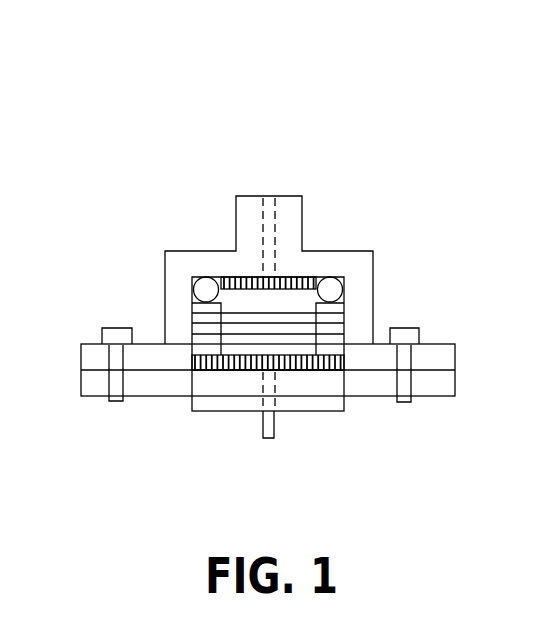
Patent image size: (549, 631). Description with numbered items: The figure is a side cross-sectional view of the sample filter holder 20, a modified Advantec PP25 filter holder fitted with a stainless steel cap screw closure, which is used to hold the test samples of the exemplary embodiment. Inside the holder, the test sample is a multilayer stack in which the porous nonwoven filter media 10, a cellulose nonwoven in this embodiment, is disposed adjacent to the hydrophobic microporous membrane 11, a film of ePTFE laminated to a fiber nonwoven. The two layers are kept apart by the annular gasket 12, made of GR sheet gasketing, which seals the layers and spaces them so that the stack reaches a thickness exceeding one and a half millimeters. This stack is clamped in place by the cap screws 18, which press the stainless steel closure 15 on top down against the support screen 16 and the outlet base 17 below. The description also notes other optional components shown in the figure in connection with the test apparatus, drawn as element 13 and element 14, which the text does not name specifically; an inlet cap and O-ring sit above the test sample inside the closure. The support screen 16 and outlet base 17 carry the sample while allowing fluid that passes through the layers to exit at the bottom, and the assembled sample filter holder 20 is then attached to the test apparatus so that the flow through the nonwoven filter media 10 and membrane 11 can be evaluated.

The sample filter holder 20 is at (252, 145).
The stainless steel closure 15 is at (313, 250).
The filter cavity with O-ring seals 13 is at (195, 277).
The upper screen 14 is at (307, 277).
The annular gasket 12 is at (344, 352).
The porous nonwoven filter media 10 is at (192, 313).
The hydrophobic microporous membrane 11 is at (192, 334).
The support screen 16 is at (192, 371).
The outlet base 17 is at (217, 402).
The cap screws 18 is at (422, 332).